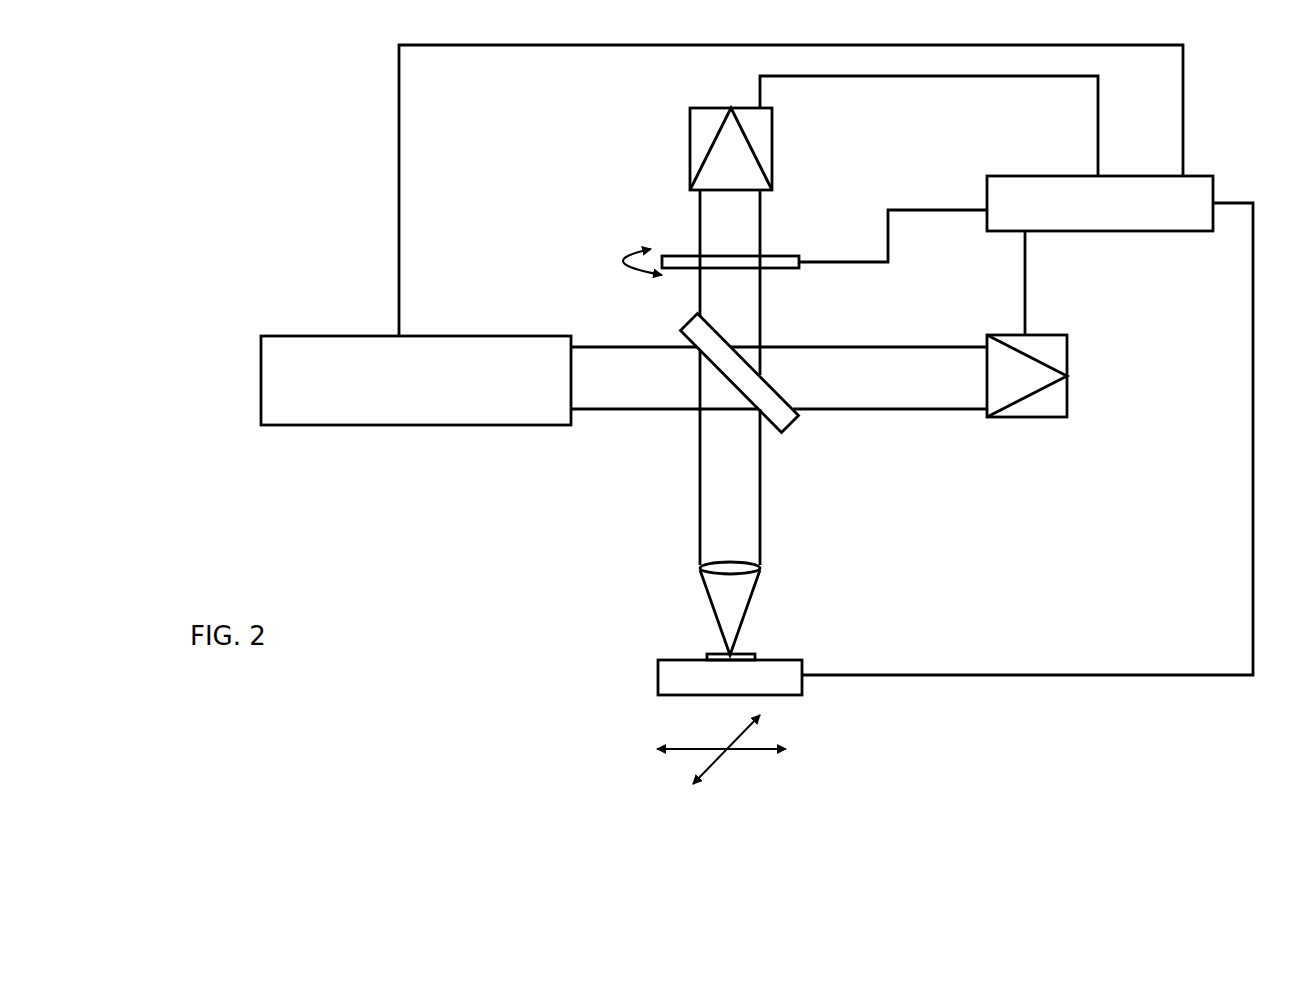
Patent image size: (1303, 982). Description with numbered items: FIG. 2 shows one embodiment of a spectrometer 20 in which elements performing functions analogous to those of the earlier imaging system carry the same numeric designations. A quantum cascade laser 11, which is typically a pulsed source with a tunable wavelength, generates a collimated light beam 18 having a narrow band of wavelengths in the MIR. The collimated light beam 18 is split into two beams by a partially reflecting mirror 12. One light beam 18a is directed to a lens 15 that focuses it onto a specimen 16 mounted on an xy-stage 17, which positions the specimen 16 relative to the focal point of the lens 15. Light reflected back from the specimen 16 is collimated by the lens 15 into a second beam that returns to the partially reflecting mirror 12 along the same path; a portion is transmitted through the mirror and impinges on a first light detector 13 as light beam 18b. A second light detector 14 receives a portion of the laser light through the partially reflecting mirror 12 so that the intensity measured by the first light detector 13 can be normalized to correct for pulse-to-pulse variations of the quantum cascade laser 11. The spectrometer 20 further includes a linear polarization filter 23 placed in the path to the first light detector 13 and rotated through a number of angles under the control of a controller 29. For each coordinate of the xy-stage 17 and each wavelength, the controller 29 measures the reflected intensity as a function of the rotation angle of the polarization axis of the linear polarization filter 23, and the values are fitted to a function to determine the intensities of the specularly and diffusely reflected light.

The spectrometer 20 is at (296, 191).
The quantum cascade laser 11 is at (413, 426).
The partially reflecting mirror 12 is at (783, 430).
The first light detector 13 is at (772, 152).
The second light detector 14 is at (1067, 401).
The lens 15 is at (760, 568).
The specimen 16 is at (712, 653).
The xy-stage 17 is at (660, 672).
The collimated light beam 18 is at (618, 351).
The light beam 18a is at (705, 473).
The light beam 18b is at (748, 315).
The linear polarization filter 23 is at (799, 257).
The controller 29 is at (1145, 233).